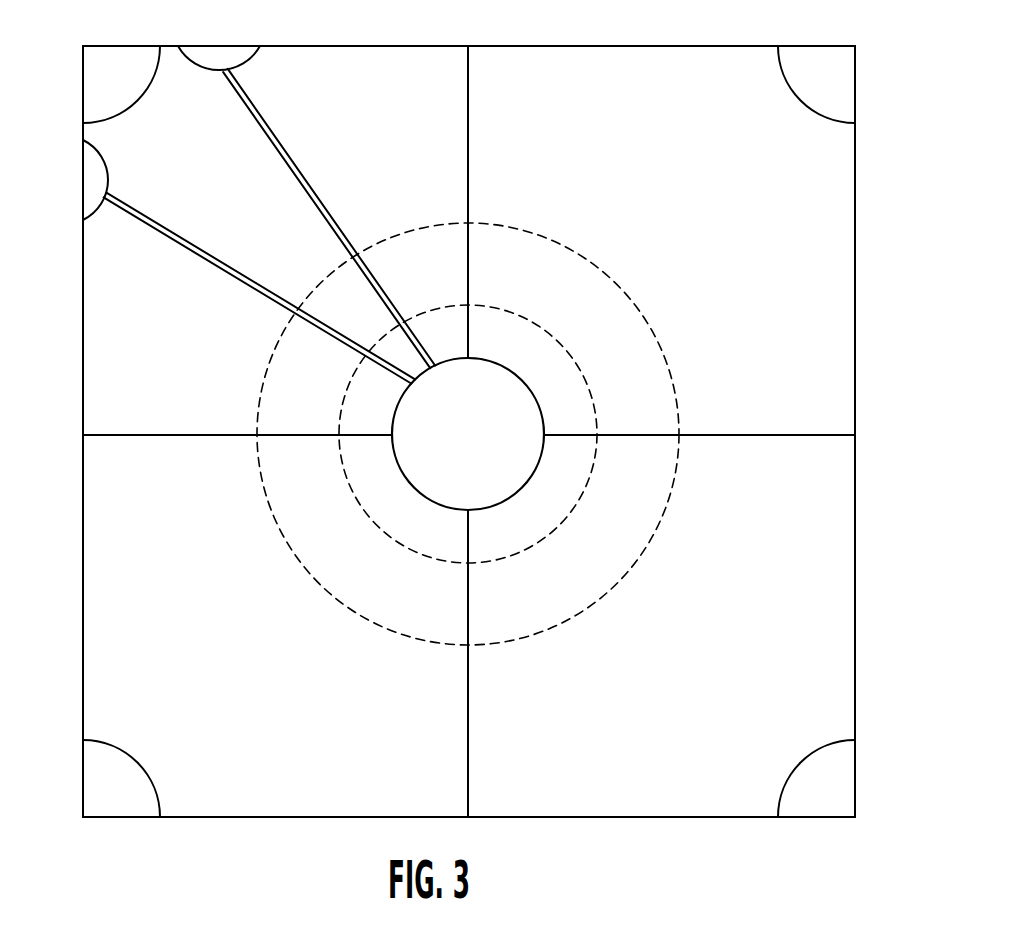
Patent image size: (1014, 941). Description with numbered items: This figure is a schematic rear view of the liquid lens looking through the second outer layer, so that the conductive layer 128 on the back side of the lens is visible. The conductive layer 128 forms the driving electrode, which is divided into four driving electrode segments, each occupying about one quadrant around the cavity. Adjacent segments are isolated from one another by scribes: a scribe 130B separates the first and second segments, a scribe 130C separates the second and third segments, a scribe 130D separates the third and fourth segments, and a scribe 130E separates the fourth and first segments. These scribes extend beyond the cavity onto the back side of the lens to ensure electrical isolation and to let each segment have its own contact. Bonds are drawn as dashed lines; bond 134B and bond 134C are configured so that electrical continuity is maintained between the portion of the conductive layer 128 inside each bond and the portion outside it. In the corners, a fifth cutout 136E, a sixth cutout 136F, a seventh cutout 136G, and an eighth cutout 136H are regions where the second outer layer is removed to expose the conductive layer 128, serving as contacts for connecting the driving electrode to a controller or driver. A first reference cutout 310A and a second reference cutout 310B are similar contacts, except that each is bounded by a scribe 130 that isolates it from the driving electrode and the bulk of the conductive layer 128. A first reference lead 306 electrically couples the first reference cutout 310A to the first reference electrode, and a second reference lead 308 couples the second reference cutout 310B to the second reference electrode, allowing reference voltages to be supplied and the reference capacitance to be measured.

The conductive layer 128 is at (682, 273).
The scribe 130 is at (192, 55).
The scribe 130B is at (471, 323).
The scribe 130C is at (363, 434).
The scribe 130D is at (468, 539).
The scribe 130E is at (569, 435).
The bond 134B is at (364, 510).
The bond 134C is at (310, 575).
The fifth cutout 136E is at (818, 57).
The sixth cutout 136F is at (140, 56).
The seventh cutout 136G is at (153, 810).
The eighth cutout 136H is at (811, 810).
The first reference lead 306 is at (197, 257).
The second reference lead 308 is at (318, 200).
The first reference cutout 310A is at (97, 170).
The second reference cutout 310B is at (245, 55).